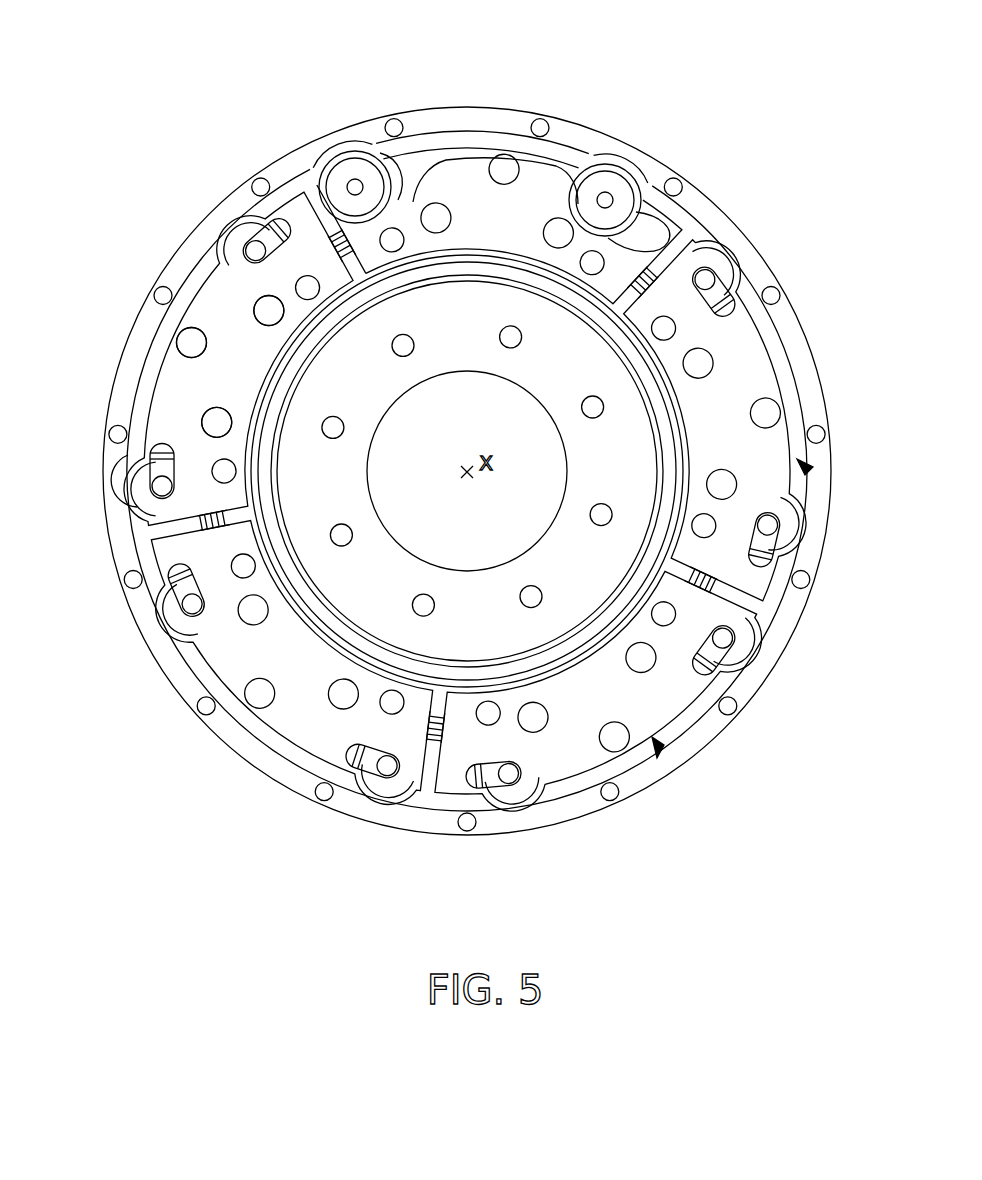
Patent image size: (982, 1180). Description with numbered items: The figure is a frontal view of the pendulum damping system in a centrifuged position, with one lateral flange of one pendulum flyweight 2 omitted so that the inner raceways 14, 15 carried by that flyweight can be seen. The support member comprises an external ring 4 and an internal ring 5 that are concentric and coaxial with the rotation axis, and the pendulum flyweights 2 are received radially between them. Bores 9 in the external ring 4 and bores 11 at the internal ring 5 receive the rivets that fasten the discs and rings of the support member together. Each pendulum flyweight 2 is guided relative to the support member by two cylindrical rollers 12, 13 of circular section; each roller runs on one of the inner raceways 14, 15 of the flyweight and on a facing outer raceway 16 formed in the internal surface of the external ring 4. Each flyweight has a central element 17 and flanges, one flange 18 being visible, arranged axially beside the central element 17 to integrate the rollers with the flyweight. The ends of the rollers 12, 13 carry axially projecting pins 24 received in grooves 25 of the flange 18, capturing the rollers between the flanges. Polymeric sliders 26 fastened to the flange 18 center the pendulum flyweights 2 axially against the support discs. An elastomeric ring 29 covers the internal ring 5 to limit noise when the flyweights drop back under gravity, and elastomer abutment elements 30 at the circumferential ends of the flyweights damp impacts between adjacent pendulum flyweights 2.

The pendulum flyweight 2 is at (808, 465).
The external ring 4 is at (215, 198).
The internal ring 5 is at (612, 395).
The bore 9 is at (156, 291).
The bore 11 is at (612, 517).
The cylindrical roller 12 is at (352, 168).
The cylindrical roller 13 is at (628, 172).
The inner raceway 14 is at (406, 195).
The inner raceway 15 is at (632, 250).
The outer raceway 16 is at (328, 172).
The central element 17 is at (522, 207).
The flange 18 is at (170, 417).
The pin 24 is at (157, 492).
The groove 25 is at (152, 474).
The slider 26 is at (263, 311).
The ring 29 is at (670, 442).
The abutment element 30 is at (693, 577).